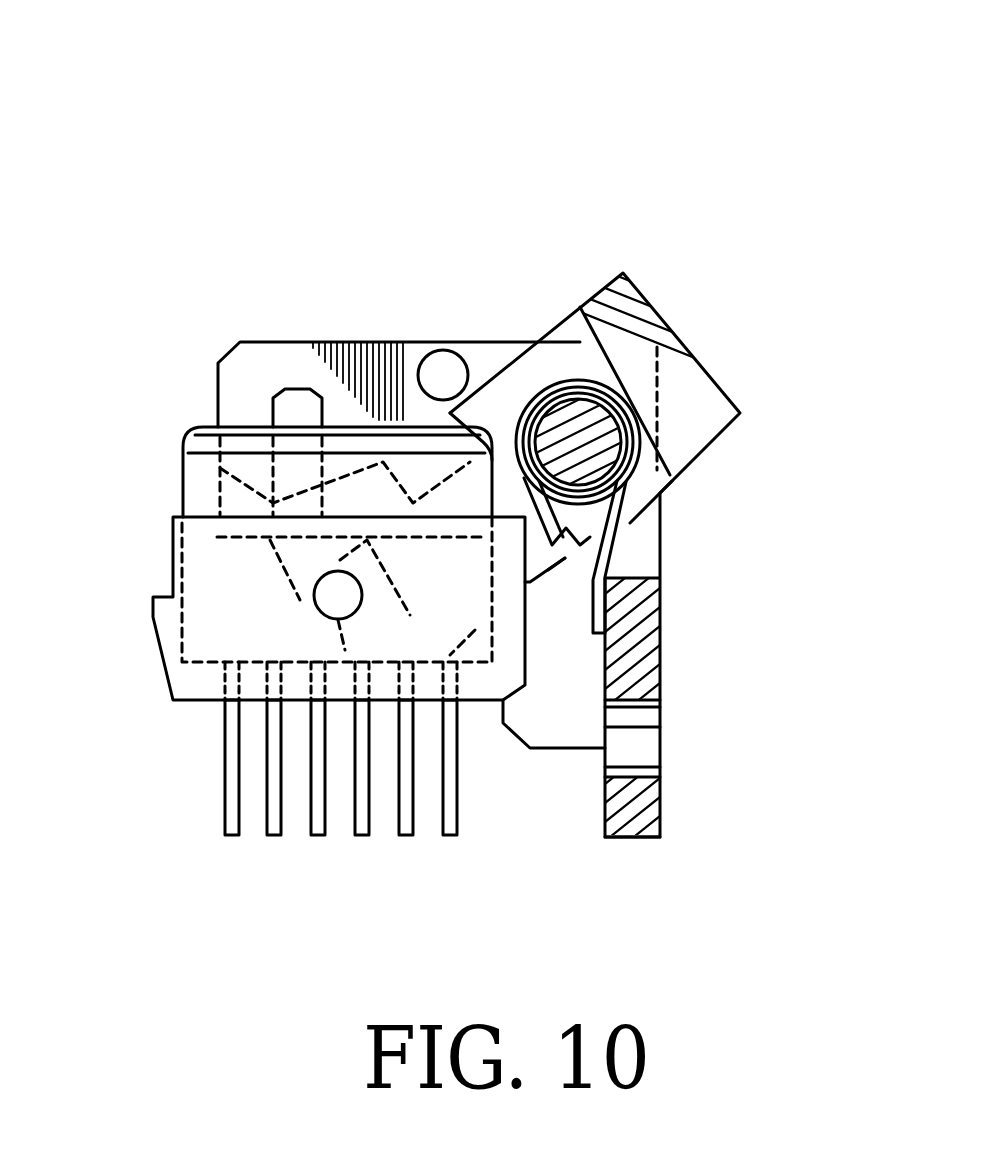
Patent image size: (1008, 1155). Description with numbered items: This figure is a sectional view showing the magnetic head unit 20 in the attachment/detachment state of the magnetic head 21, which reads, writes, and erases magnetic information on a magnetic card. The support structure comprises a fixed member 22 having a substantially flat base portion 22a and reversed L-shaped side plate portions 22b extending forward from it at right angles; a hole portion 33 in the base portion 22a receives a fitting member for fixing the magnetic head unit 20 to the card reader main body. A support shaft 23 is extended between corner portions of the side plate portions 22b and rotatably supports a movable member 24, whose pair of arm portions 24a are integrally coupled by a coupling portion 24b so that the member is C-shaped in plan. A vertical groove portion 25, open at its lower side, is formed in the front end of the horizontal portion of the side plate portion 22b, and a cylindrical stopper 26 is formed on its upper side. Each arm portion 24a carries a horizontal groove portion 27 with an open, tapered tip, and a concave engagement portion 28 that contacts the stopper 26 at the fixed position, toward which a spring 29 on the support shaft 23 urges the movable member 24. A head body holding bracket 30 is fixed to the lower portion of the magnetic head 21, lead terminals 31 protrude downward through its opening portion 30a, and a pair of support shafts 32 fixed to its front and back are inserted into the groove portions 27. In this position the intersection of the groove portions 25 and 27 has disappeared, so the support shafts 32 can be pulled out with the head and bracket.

The magnetic head unit 20 is at (302, 176).
The magnetic head 21 is at (183, 500).
The fixed member 22 is at (684, 644).
The base portion 22a is at (663, 810).
The reversed L-shaped side plate portion 22b is at (280, 362).
The support shaft 23 is at (573, 425).
The movable member 24 is at (706, 340).
The arm portion 24a is at (545, 577).
The coupling portion 24b is at (705, 384).
The groove portion 25 is at (220, 470).
The stopper 26 is at (443, 350).
The groove portion 27 is at (395, 598).
The concave engagement portion 28 is at (417, 453).
The spring 29 is at (665, 478).
The head body holding bracket 30 is at (153, 624).
The opening portion 30a is at (208, 710).
The lead terminals 31 is at (228, 818).
The support shaft 32 is at (312, 590).
The hole portion 33 is at (643, 750).